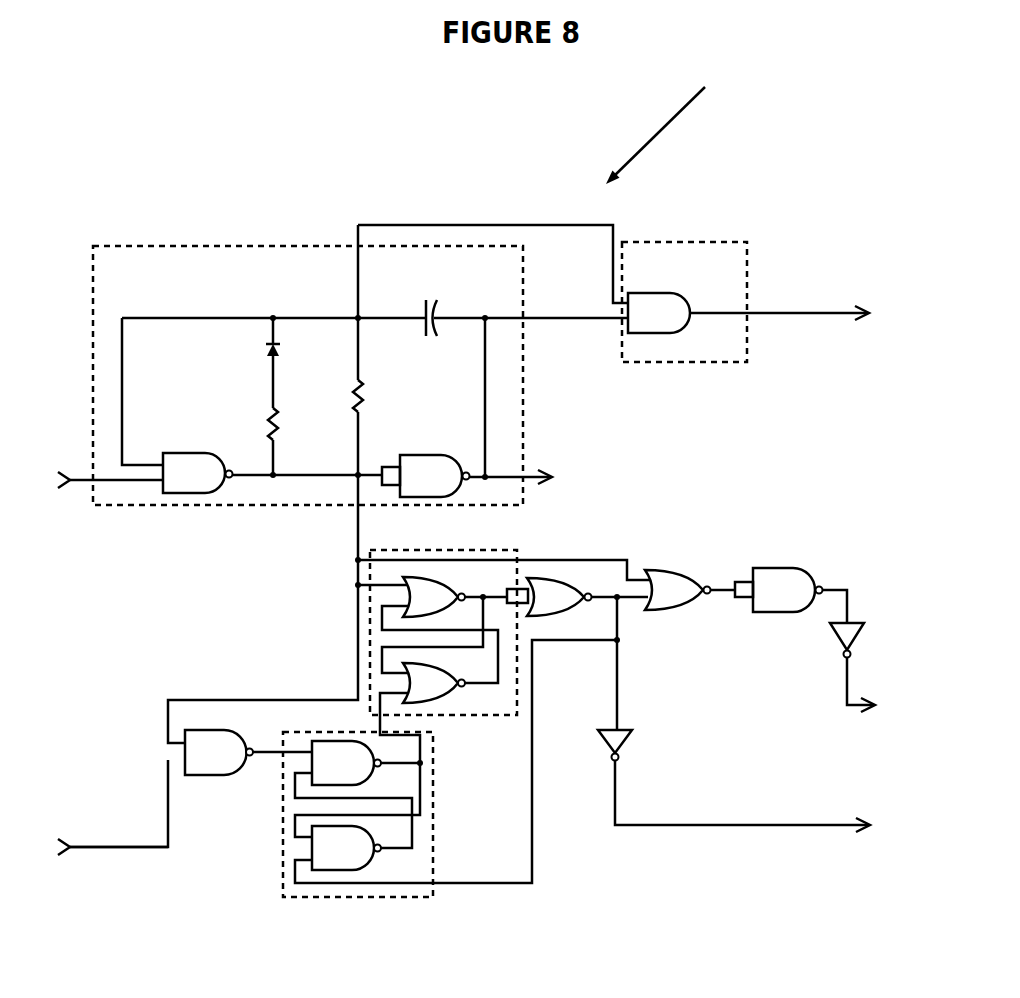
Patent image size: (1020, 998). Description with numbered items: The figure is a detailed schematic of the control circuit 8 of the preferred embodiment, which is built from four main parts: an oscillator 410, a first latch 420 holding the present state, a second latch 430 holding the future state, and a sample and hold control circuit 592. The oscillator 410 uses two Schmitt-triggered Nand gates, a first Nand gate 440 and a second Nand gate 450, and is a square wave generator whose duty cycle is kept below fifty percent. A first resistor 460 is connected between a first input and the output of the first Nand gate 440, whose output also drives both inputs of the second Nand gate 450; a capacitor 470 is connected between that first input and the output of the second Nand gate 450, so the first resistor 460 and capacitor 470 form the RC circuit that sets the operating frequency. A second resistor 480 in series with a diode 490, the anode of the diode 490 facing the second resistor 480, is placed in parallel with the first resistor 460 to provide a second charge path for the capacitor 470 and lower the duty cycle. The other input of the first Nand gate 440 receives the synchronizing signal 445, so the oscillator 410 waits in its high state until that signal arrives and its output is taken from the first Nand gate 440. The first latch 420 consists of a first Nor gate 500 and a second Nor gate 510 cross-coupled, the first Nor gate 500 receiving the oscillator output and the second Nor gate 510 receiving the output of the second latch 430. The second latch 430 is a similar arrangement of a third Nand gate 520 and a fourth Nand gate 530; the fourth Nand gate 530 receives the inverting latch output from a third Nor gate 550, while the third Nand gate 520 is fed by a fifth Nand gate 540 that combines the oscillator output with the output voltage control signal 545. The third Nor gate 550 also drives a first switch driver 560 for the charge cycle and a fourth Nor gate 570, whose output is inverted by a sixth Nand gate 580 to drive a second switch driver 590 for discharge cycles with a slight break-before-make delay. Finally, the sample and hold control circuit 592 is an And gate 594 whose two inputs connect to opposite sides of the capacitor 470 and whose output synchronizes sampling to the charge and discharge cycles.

The control circuit 8 is at (662, 123).
The oscillator 410 is at (523, 405).
The first latch 420 is at (505, 717).
The second latch 430 is at (418, 900).
The first Nand gate 440 is at (185, 495).
The synchronizing signal 445 is at (138, 483).
The second Nand gate 450 is at (415, 500).
The first resistor 460 is at (360, 412).
The capacitor 470 is at (433, 305).
The second resistor 480 is at (278, 437).
The diode 490 is at (282, 353).
The first Nor gate 500 is at (440, 583).
The second Nor gate 510 is at (440, 705).
The third Nand gate 520 is at (345, 742).
The fourth Nand gate 530 is at (340, 872).
The fifth Nand gate 540 is at (192, 777).
The output voltage control signal 545 is at (140, 850).
The third Nor gate 550 is at (565, 580).
The first switch driver 560 is at (628, 742).
The fourth Nor gate 570 is at (660, 612).
The sixth Nand gate 580 is at (765, 612).
The second switch driver 590 is at (855, 637).
The sample and hold control circuit 592 is at (700, 365).
The And gate 594 is at (650, 291).